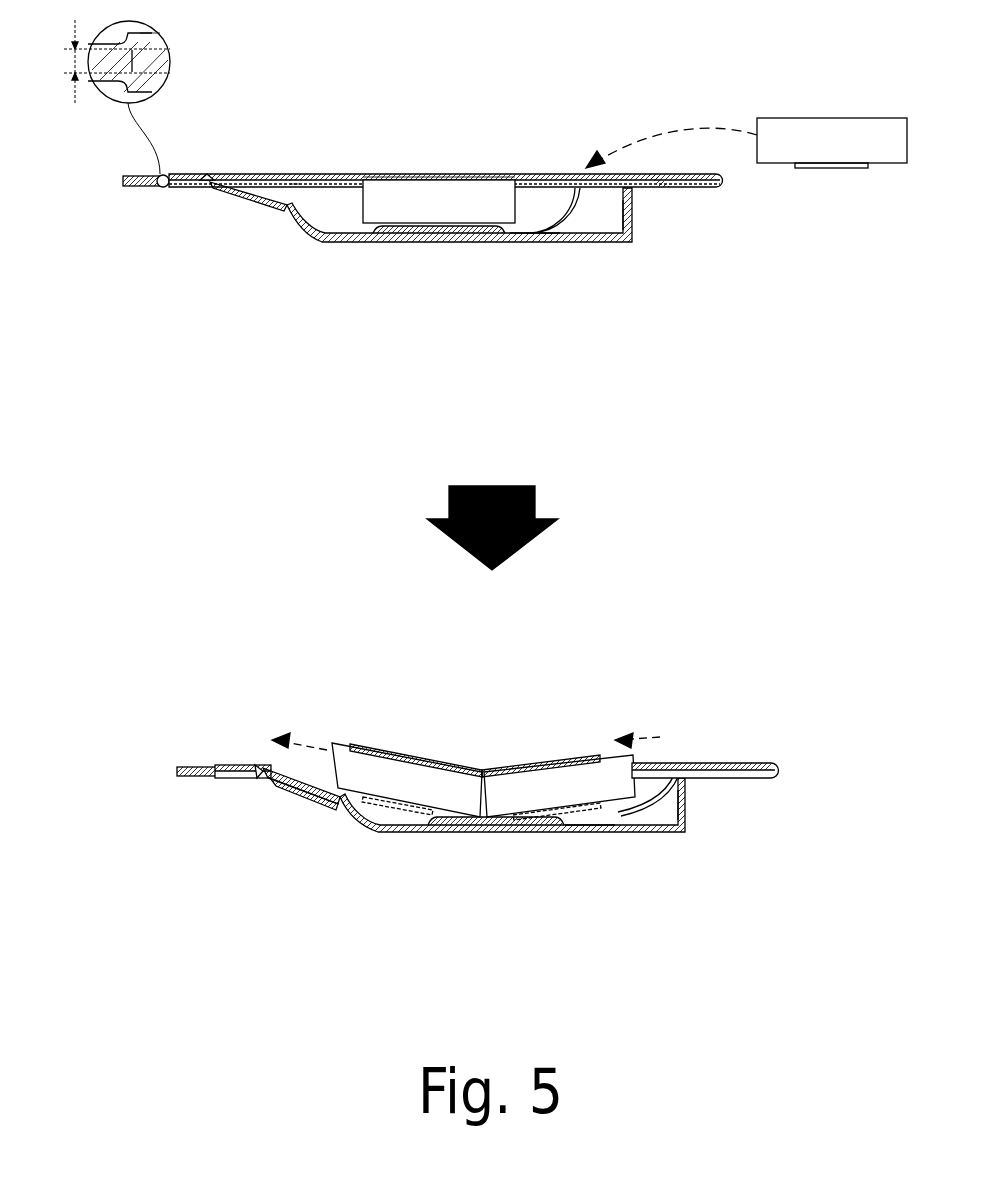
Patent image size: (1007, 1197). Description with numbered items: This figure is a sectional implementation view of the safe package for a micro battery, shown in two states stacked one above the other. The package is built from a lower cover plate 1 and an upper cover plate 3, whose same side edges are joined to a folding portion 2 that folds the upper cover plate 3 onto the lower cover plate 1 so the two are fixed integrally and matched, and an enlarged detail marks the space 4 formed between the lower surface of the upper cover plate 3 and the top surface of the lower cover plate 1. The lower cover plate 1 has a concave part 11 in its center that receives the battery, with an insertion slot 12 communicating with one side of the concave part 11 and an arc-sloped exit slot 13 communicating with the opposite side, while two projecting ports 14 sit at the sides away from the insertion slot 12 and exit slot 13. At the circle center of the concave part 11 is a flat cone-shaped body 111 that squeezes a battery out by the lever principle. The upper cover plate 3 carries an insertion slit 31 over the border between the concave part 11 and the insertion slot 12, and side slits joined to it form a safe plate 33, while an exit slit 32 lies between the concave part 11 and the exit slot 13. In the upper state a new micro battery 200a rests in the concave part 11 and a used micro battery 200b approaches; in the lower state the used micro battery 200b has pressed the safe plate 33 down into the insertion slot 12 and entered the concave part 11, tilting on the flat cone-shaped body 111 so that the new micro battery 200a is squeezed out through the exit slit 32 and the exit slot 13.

The lower cover plate 1 is at (176, 190).
The folding portion 2 is at (723, 181).
The upper cover plate 3 is at (178, 174).
The space 4 is at (108, 62).
The concave part 11 is at (535, 220).
The insertion slot 12 is at (603, 218).
The exit slot 13 is at (261, 195).
The projecting ports 14 is at (207, 174).
The insertion slit 31 is at (545, 174).
The exit slit 32 is at (295, 174).
The safe plate 33 is at (577, 185).
The flat cone-shaped body 111 is at (412, 242).
The new micro battery 200a is at (432, 186).
The used micro battery 200b is at (840, 122).